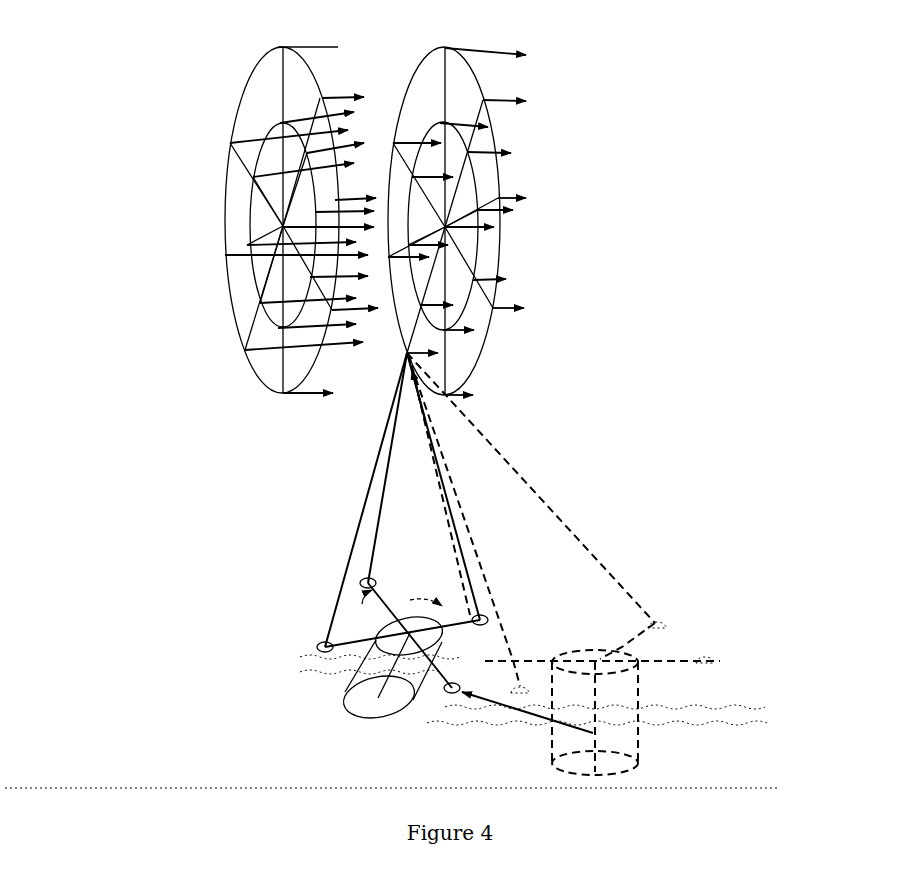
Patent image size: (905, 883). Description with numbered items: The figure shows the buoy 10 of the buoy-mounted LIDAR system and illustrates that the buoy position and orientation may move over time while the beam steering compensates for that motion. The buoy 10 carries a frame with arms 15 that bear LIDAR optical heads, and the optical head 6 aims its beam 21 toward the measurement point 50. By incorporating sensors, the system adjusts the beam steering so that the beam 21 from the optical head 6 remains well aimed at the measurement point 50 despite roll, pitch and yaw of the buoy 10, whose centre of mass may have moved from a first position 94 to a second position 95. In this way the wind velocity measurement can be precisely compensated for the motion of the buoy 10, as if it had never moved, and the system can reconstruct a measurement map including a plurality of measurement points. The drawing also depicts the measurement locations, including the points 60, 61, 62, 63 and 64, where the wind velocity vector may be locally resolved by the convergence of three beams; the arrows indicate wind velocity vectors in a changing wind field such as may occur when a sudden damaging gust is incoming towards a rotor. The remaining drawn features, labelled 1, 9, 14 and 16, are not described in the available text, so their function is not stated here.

The anchor 1 is at (660, 624).
The optical head 6 is at (483, 620).
The submerged anchor cylinder 9 is at (637, 697).
The buoy 10 is at (352, 677).
The water surface line 14 is at (667, 662).
The arms 15 is at (440, 677).
The mooring line 16 is at (617, 582).
The beam 21 is at (478, 590).
The measurement point 50 is at (407, 352).
The measurement location point 60 is at (243, 350).
The measurement location point 61 is at (237, 255).
The measurement location point 62 is at (268, 235).
The measurement location point 63 is at (280, 224).
The measurement location point 64 is at (230, 143).
The first position 94 is at (593, 733).
The second position 95 is at (393, 678).